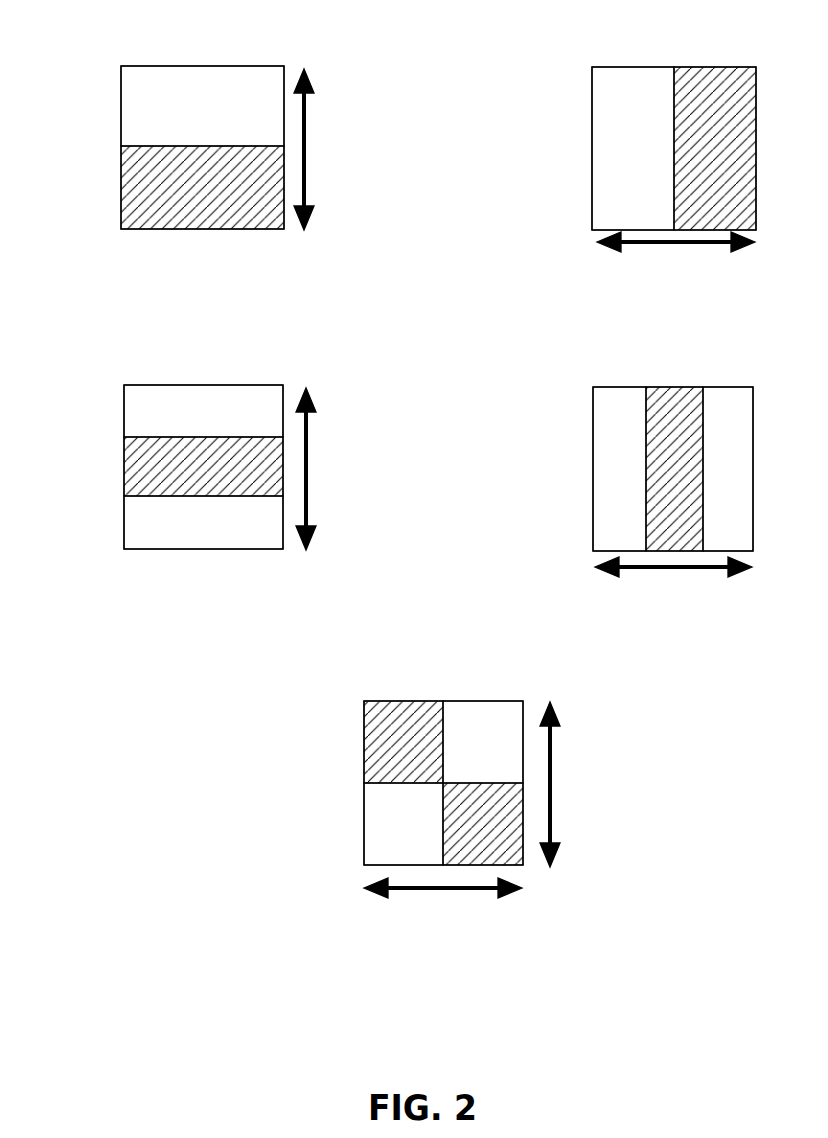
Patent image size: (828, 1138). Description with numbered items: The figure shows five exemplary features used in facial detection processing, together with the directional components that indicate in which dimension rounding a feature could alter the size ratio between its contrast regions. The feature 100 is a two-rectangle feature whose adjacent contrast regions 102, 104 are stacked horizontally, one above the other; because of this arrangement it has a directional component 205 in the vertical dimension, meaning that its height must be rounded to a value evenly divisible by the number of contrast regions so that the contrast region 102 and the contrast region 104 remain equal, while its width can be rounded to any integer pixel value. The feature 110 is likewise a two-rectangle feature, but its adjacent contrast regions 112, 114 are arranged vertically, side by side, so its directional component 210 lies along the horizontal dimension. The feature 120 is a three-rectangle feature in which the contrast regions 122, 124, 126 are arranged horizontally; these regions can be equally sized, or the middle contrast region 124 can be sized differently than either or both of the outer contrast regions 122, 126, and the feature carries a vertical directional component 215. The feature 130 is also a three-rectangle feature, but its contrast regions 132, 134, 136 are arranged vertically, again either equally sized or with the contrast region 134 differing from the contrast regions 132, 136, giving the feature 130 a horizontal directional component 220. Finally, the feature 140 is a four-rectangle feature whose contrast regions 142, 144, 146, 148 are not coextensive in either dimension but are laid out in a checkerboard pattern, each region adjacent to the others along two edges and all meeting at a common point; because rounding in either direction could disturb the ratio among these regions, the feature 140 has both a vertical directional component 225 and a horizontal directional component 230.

The feature 100 is at (203, 66).
The contrast region 102 is at (121, 117).
The contrast region 104 is at (121, 192).
The directional component 205 is at (307, 150).
The feature 110 is at (592, 188).
The contrast region 112 is at (615, 67).
The contrast region 114 is at (717, 67).
The directional component 210 is at (682, 243).
The feature 120 is at (207, 385).
The contrast region 122 is at (124, 407).
The contrast region 124 is at (124, 464).
The contrast region 126 is at (124, 518).
The directional component 215 is at (307, 468).
The feature 130 is at (593, 507).
The contrast region 132 is at (600, 387).
The contrast region 134 is at (738, 387).
The contrast region 136 is at (678, 387).
The directional component 220 is at (680, 567).
The feature 140 is at (470, 701).
The contrast region 142 is at (364, 748).
The contrast region 144 is at (443, 810).
The contrast region 146 is at (502, 779).
The contrast region 148 is at (422, 862).
The directional component 225 is at (553, 783).
The directional component 230 is at (450, 888).